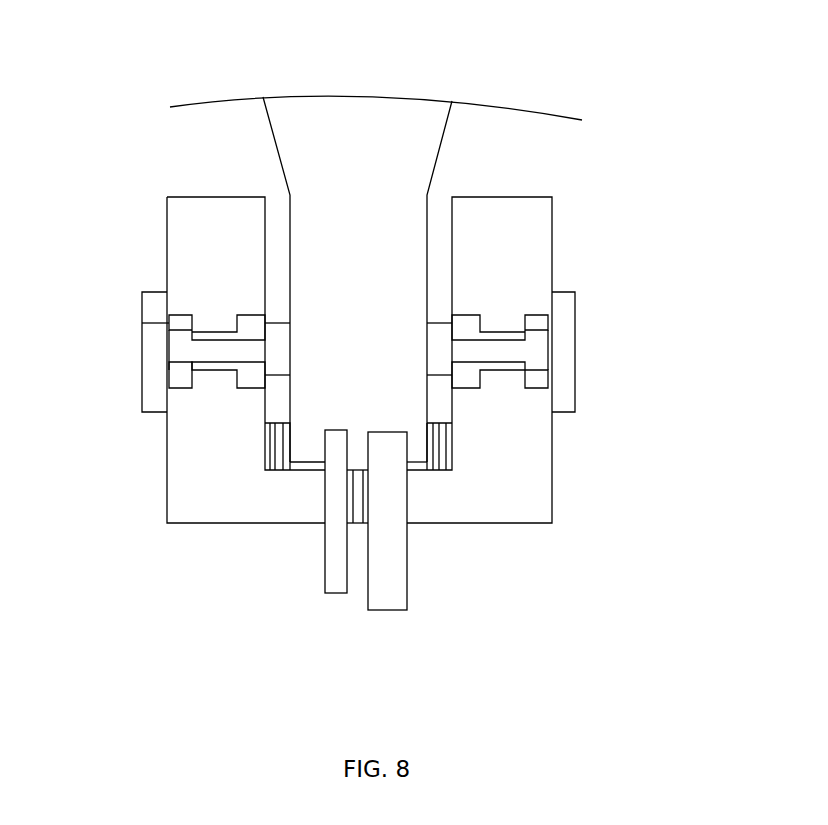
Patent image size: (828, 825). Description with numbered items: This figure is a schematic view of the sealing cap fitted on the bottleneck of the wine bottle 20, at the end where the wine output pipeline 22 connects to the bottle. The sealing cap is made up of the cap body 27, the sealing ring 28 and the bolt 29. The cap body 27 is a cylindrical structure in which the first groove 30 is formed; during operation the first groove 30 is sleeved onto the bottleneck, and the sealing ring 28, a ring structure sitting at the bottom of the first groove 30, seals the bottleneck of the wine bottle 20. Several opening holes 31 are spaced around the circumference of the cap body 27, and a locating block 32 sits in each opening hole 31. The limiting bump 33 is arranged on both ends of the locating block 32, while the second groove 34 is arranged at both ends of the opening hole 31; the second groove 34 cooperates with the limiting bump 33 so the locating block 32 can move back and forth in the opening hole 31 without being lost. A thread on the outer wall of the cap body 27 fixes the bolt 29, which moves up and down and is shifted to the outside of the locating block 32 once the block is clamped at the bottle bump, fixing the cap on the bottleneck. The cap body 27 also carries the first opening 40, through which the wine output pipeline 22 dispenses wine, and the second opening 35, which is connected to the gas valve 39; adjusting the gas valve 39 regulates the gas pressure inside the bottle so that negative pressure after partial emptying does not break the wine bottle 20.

The wine bottle 20 is at (345, 127).
The wine output pipeline 22 is at (385, 592).
The cap body 27 is at (532, 424).
The sealing ring 28 is at (265, 455).
The bolt 29 is at (577, 353).
The first groove 30 is at (440, 277).
The opening hole 31 is at (210, 368).
The locating block 32 is at (217, 345).
The limiting bump 33 is at (178, 365).
The second groove 34 is at (168, 324).
The second opening 35 is at (322, 467).
The gas valve 39 is at (332, 555).
The first opening 40 is at (408, 495).